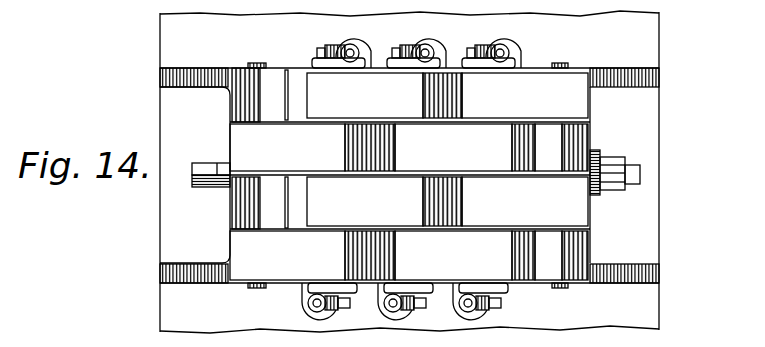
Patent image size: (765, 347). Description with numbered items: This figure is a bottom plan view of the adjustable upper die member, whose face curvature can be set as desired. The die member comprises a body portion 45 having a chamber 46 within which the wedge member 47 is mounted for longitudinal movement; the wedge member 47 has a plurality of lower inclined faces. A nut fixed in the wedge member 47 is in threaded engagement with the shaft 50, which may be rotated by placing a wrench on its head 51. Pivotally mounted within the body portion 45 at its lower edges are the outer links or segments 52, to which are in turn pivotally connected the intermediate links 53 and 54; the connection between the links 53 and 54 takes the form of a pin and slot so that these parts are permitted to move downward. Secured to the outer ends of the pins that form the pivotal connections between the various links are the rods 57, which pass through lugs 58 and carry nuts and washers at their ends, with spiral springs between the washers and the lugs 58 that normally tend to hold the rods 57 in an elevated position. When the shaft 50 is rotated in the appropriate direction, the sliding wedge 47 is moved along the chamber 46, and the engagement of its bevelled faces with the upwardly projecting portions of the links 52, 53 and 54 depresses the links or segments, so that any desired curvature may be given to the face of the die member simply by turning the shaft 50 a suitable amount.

The body portion 45 is at (240, 67).
The chamber 46 is at (297, 205).
The wedge member 47 is at (533, 149).
The shaft 50 is at (227, 190).
The head 51 is at (201, 163).
The outer links or segments 52 is at (409, 176).
The intermediate link 53 is at (365, 149).
The intermediate link 54 is at (453, 202).
The rods 57 is at (316, 62).
The lugs 58 is at (353, 43).